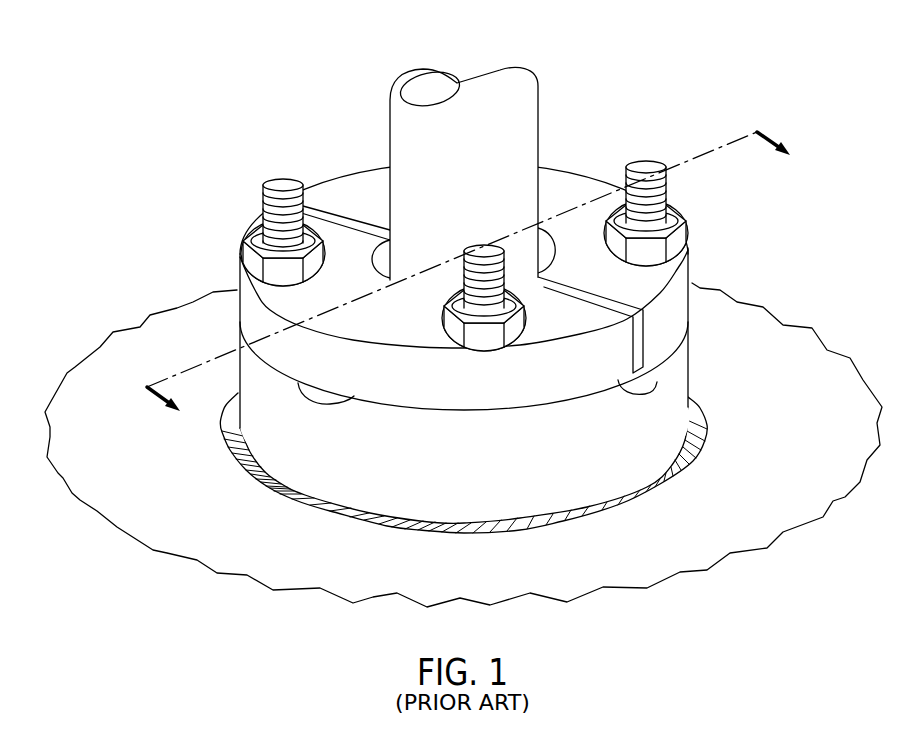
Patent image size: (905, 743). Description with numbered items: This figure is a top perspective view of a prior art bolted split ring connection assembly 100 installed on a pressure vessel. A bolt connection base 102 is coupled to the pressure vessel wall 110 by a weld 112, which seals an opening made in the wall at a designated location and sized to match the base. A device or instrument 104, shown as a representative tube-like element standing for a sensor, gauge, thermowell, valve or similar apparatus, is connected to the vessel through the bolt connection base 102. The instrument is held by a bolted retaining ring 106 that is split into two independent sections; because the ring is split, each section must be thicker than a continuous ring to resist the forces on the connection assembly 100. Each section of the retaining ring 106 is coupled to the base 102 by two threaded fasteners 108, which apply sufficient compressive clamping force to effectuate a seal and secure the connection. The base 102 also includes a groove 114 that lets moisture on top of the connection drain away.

The bolted connection assembly 100 is at (152, 196).
The bolt connection base 102 is at (313, 471).
The device or instrument 104 is at (390, 124).
The bolted retaining ring 106 is at (667, 334).
The threaded fasteners 108 is at (665, 187).
The pressure vessel wall 110 is at (796, 451).
The weld 112 is at (417, 523).
The groove 114 is at (340, 398).